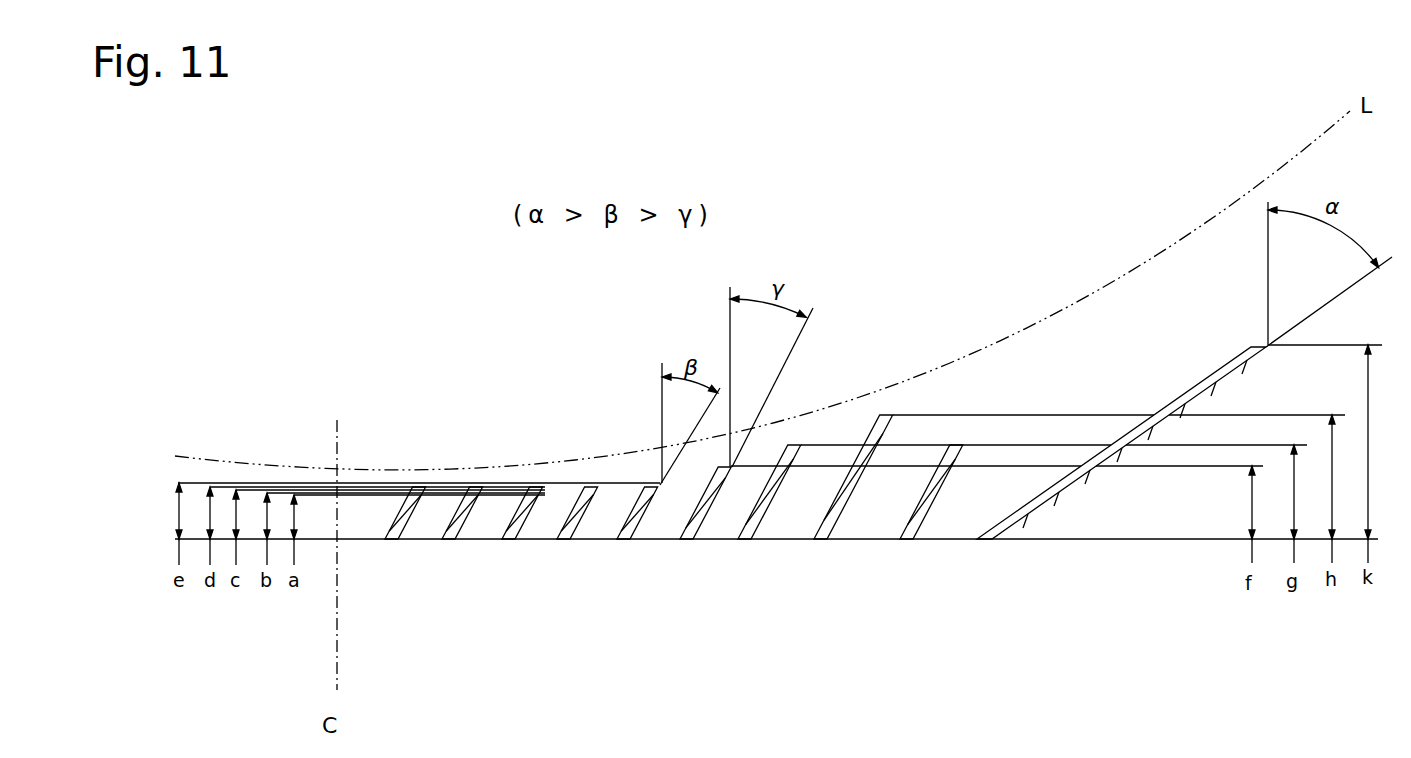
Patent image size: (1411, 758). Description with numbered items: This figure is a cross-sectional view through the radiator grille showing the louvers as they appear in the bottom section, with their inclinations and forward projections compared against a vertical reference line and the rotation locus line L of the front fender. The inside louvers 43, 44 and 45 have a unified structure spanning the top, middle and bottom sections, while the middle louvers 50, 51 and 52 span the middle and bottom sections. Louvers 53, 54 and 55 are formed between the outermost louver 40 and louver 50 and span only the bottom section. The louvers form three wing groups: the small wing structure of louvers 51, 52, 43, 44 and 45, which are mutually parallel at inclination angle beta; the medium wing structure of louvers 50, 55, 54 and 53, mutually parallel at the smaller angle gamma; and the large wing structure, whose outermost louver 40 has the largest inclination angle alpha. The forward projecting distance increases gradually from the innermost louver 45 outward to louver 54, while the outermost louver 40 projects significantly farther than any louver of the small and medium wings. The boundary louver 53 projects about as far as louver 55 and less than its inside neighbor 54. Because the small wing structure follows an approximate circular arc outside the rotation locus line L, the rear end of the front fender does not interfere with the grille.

The outermost louver 40 is at (1212, 372).
The inside louver 43 is at (552, 500).
The inside louver 44 is at (462, 510).
The innermost louver 45 is at (403, 510).
The middle louver 50 is at (702, 520).
The middle louver 51 is at (650, 520).
The middle louver 52 is at (592, 520).
The boundary louver 53 is at (918, 520).
The louver 54 is at (835, 520).
The louver 55 is at (757, 520).